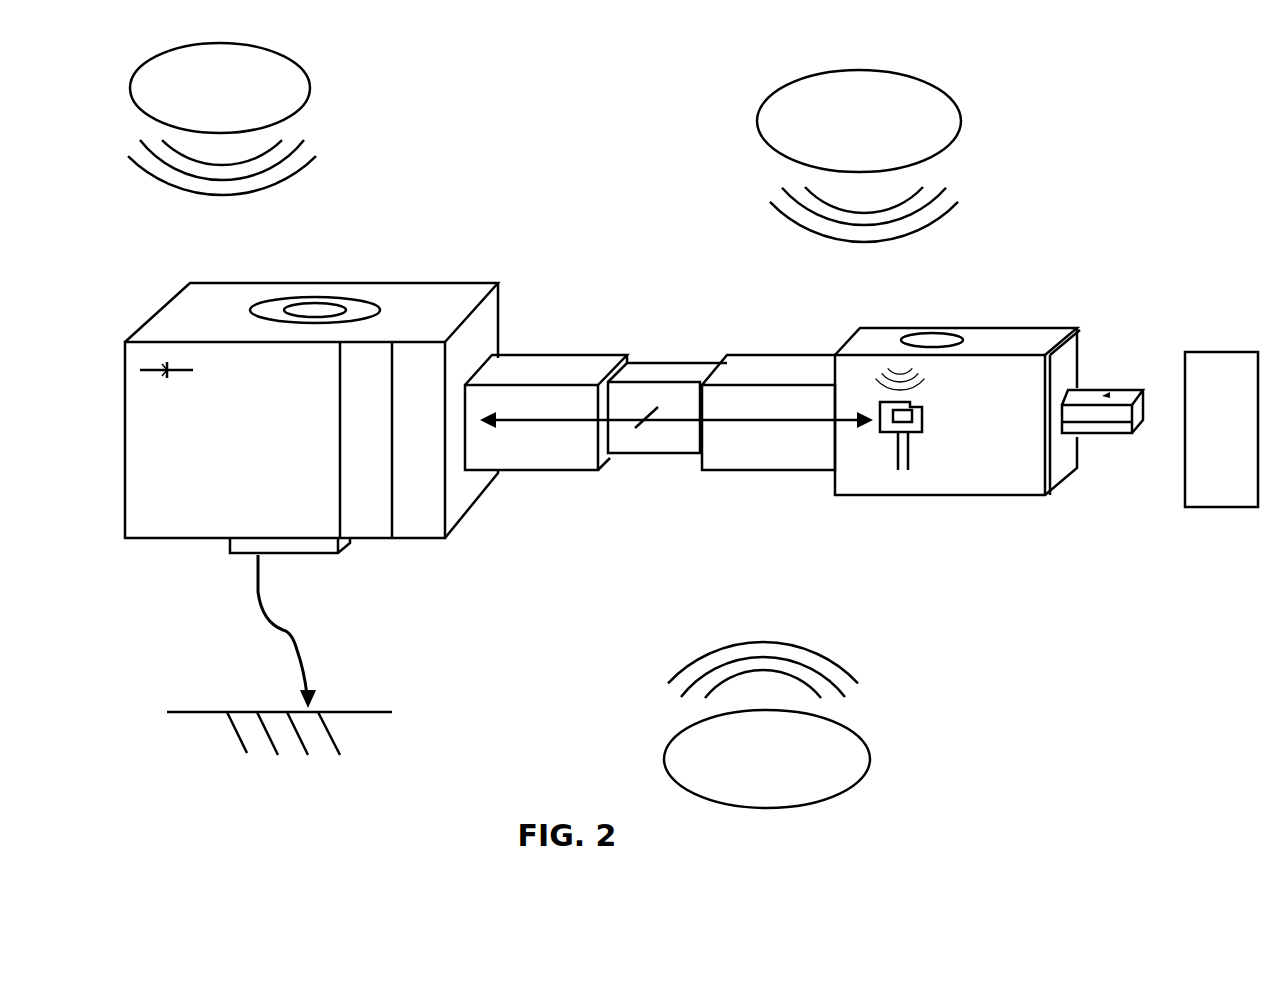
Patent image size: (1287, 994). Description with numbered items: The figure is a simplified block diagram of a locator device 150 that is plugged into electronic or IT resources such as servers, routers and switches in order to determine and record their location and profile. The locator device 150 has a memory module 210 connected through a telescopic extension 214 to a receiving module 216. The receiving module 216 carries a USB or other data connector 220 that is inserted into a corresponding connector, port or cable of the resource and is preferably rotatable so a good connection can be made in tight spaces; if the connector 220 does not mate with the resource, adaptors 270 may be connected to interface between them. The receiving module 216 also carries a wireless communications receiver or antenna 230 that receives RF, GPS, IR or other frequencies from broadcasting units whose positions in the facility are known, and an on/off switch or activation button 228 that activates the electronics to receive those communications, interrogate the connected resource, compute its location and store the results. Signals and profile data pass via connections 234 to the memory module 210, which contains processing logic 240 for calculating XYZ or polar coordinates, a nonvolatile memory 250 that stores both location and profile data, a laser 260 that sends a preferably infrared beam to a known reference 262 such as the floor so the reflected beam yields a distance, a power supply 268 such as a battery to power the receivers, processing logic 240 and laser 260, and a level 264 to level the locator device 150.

The locator device 150 is at (276, 488).
The memory module 210 is at (450, 282).
The telescopic extension 214 is at (565, 355).
The receiving module 216 is at (1010, 324).
The connector 220 is at (1100, 437).
The activation button 228 is at (910, 335).
The antenna 230 is at (897, 470).
The connections 234 is at (660, 423).
The processing logic 240 is at (413, 541).
The nonvolatile memory 250 is at (368, 541).
The laser 260 is at (253, 557).
The reference 262 is at (296, 733).
The level 264 is at (300, 303).
The power supply 268 is at (143, 373).
The adaptors 270 is at (1203, 350).